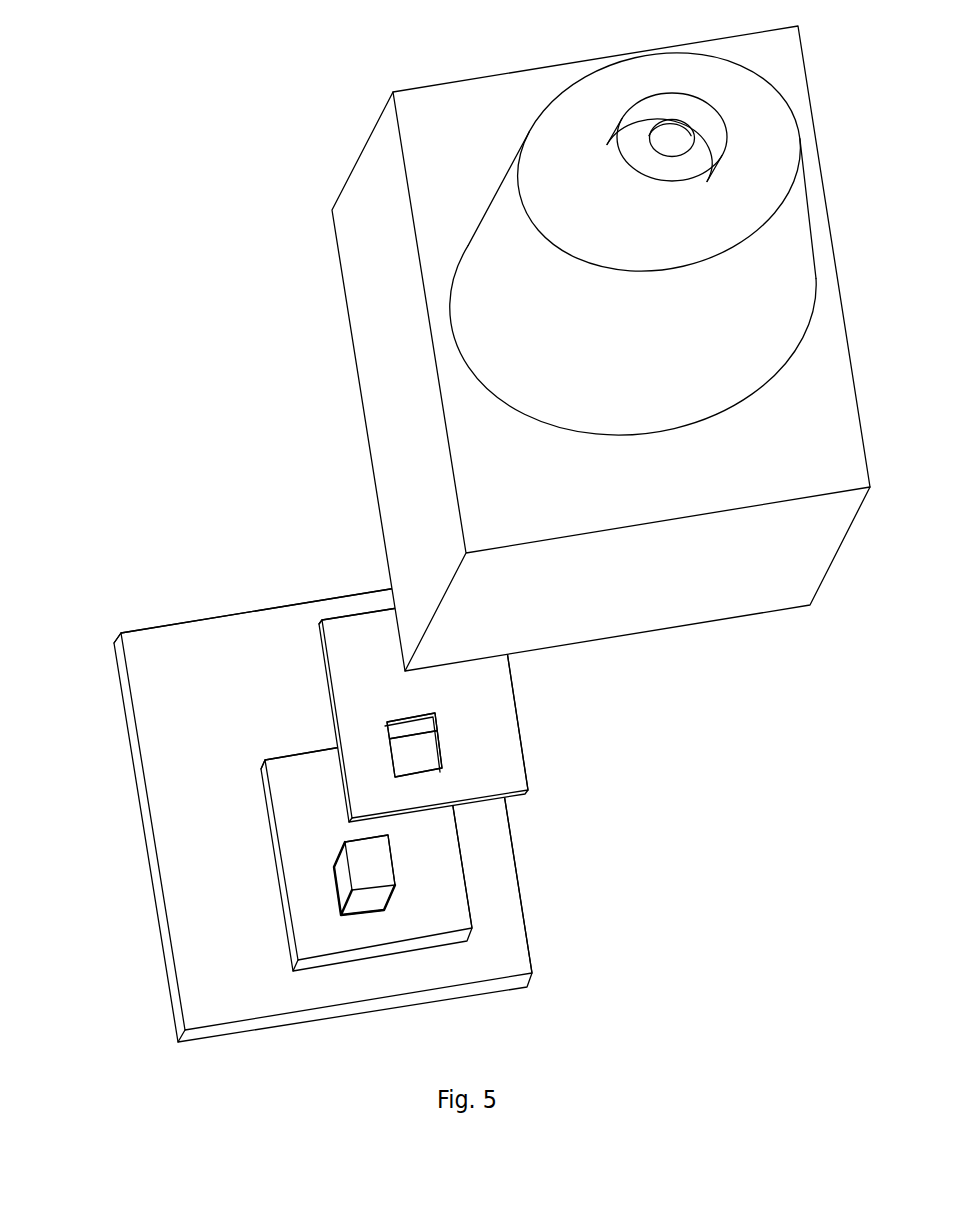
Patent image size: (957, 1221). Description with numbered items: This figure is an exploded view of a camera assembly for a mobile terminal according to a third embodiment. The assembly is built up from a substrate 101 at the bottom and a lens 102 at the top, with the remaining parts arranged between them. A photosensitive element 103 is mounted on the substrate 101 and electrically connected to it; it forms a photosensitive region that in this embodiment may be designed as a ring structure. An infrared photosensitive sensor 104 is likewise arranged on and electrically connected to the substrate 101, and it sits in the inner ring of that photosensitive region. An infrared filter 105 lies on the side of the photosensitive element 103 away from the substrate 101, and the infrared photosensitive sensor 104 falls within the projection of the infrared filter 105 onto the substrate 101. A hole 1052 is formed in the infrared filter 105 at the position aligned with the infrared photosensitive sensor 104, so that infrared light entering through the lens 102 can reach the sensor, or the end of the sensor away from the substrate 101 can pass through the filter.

The substrate 101 is at (210, 773).
The lens 102 is at (555, 270).
The photosensitive element 103 is at (330, 802).
The infrared photosensitive sensor 104 is at (360, 867).
The infrared filter 105 is at (343, 650).
The hole 1052 is at (413, 750).